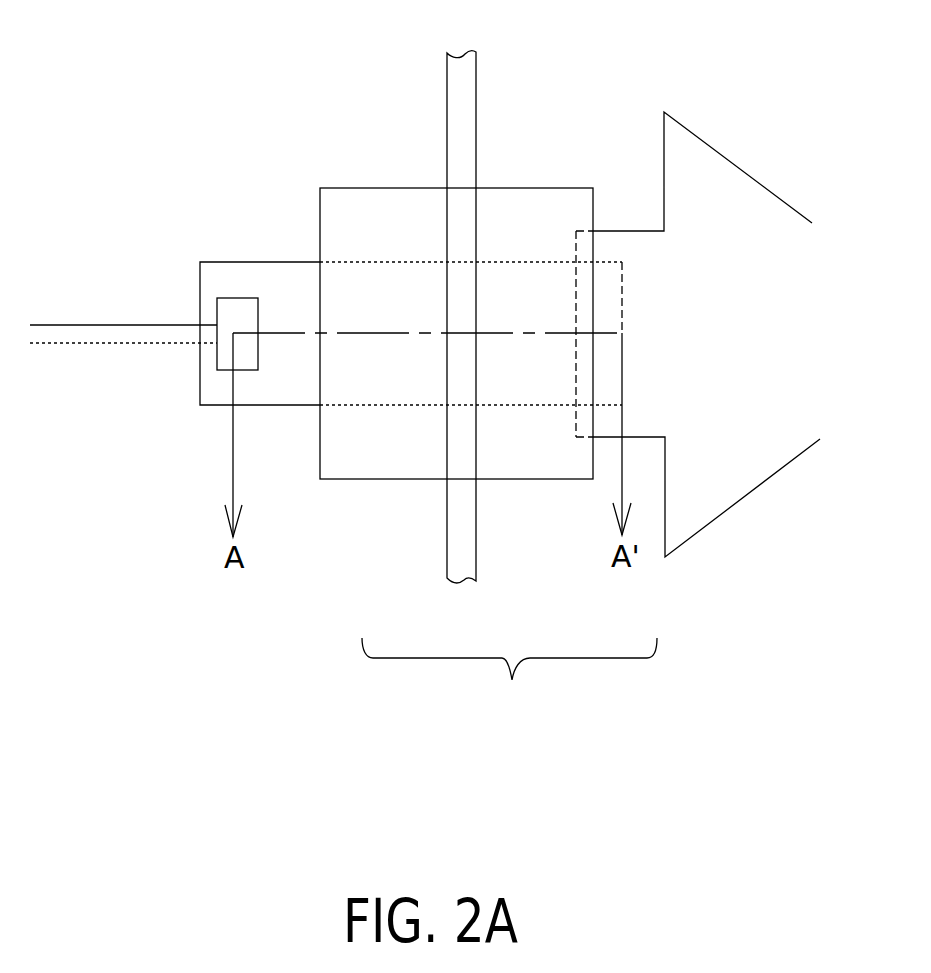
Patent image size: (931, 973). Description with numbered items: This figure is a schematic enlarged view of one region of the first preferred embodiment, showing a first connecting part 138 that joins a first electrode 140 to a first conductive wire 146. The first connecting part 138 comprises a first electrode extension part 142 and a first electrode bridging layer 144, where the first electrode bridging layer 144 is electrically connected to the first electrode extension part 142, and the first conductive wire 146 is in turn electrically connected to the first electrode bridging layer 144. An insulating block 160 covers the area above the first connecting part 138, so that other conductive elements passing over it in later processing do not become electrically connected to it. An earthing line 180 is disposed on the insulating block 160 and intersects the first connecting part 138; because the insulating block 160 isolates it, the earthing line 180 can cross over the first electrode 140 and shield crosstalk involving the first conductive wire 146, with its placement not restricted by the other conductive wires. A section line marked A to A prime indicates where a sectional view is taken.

The light source module 138 is at (509, 680).
The light guide / reflector 140 is at (751, 200).
The light emitting element 142 is at (637, 420).
The substrate / holder 144 is at (235, 282).
The lead wire 146 is at (117, 328).
The housing 160 is at (352, 200).
The partition plate 180 is at (464, 88).